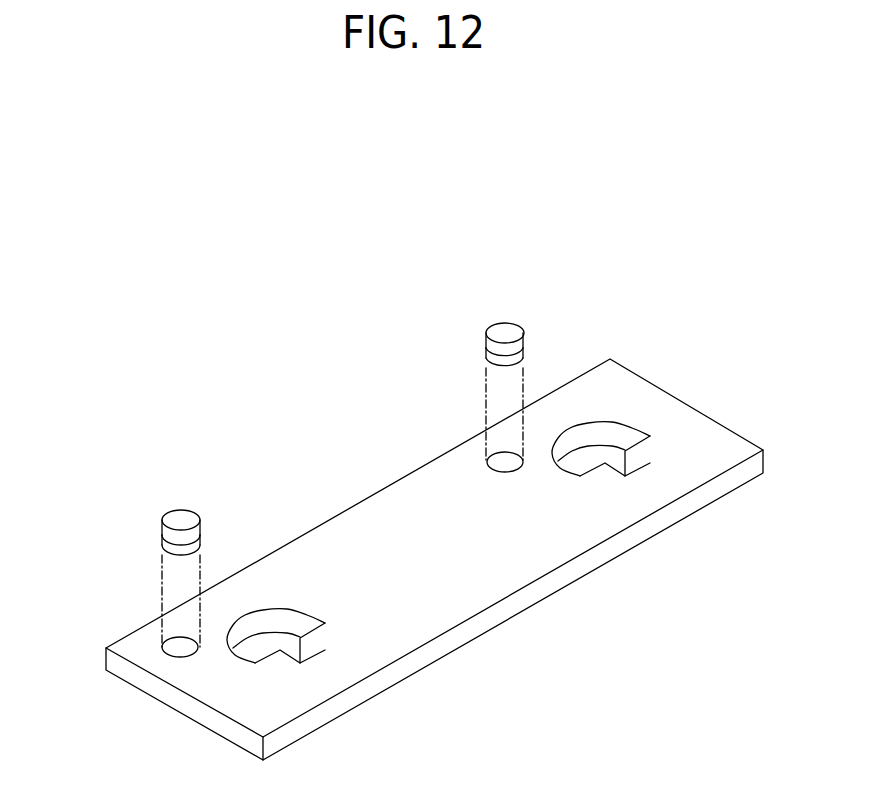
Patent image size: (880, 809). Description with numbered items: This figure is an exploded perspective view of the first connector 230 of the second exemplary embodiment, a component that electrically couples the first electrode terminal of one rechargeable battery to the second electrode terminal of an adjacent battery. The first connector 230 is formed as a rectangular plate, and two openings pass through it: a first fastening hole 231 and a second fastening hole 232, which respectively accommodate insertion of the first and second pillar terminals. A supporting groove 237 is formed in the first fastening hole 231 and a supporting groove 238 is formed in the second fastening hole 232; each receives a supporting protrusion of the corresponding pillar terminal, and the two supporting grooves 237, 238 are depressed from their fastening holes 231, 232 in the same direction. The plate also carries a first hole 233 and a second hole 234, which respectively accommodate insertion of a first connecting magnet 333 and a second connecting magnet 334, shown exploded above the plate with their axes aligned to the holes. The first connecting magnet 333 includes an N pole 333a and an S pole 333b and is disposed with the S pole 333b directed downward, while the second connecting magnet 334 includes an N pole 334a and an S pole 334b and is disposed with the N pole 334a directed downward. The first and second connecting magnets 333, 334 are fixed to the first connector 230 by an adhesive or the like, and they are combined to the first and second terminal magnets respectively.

The first connector 230 is at (655, 380).
The first fastening hole 231 is at (363, 592).
The second fastening hole 232 is at (610, 450).
The first hole 233 is at (183, 647).
The second hole 234 is at (506, 458).
The supporting groove 237 is at (301, 641).
The supporting groove 238 is at (612, 468).
The first connecting magnet 333 is at (113, 571).
The N pole 333a is at (172, 543).
The S pole 333b is at (172, 518).
The second connecting magnet 334 is at (430, 384).
The N pole 334a is at (495, 332).
The S pole 334b is at (495, 358).